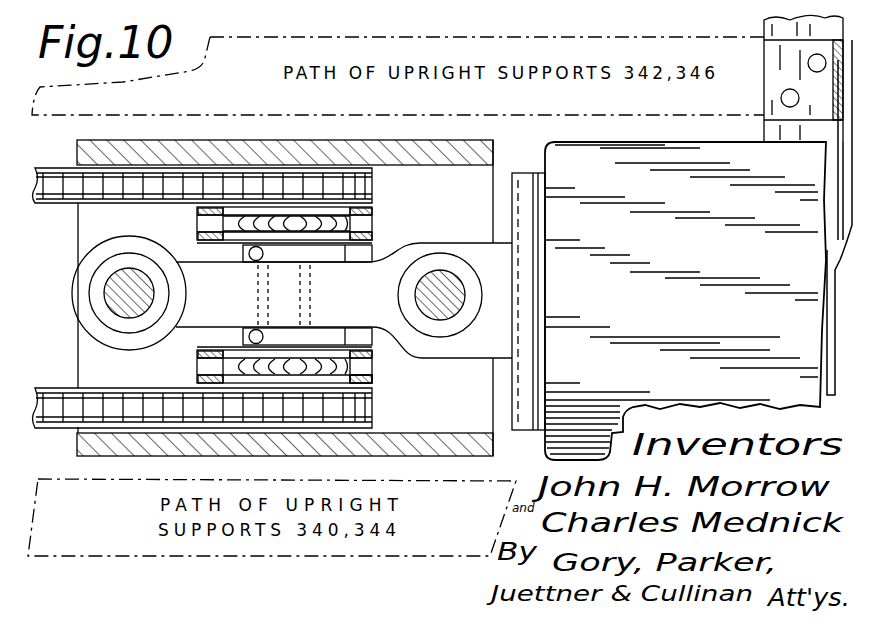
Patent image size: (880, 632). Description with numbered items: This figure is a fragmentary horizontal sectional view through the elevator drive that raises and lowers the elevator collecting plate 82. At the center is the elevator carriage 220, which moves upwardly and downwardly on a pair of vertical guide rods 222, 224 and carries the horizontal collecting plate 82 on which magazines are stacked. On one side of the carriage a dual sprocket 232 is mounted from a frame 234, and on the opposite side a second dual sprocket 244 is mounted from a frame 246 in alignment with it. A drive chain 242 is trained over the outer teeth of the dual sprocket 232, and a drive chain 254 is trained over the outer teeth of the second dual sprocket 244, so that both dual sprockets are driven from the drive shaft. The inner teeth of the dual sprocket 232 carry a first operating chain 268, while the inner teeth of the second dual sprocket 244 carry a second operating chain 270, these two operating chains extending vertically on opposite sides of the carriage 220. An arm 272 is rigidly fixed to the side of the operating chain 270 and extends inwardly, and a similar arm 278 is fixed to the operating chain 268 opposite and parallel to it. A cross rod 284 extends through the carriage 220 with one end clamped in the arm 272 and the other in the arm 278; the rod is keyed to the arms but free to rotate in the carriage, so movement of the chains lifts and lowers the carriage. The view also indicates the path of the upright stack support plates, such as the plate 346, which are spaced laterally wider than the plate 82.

The elevator collecting plate 82 is at (713, 270).
The elevator carriage 220 is at (337, 282).
The vertical guide rod 222 is at (137, 277).
The vertical guide rod 224 is at (455, 288).
The dual sprocket 232 is at (378, 206).
The frame 234 is at (293, 222).
The drive chain 242 is at (64, 192).
The second dual sprocket 244 is at (371, 383).
The frame 246 is at (400, 449).
The drive chain 254 is at (57, 395).
The first operating chain 268 is at (300, 208).
The second operating chain 270 is at (307, 368).
The arm 272 is at (365, 342).
The arm 278 is at (362, 252).
The cross rod 284 is at (322, 293).
The upright stack support plate 346 is at (835, 115).